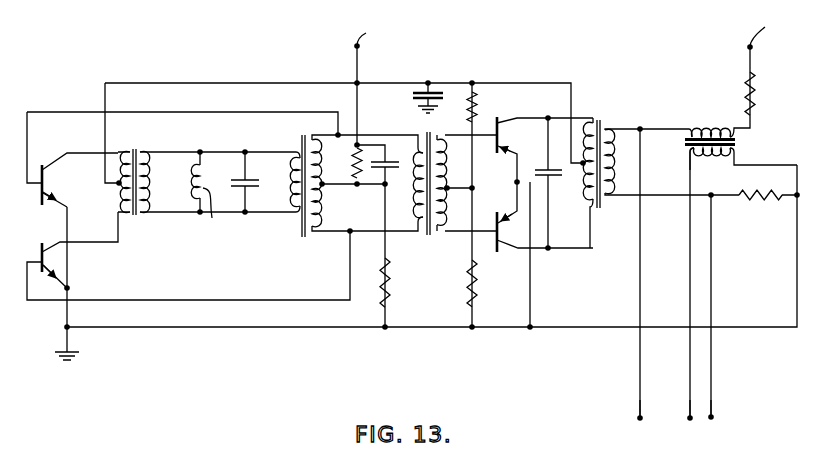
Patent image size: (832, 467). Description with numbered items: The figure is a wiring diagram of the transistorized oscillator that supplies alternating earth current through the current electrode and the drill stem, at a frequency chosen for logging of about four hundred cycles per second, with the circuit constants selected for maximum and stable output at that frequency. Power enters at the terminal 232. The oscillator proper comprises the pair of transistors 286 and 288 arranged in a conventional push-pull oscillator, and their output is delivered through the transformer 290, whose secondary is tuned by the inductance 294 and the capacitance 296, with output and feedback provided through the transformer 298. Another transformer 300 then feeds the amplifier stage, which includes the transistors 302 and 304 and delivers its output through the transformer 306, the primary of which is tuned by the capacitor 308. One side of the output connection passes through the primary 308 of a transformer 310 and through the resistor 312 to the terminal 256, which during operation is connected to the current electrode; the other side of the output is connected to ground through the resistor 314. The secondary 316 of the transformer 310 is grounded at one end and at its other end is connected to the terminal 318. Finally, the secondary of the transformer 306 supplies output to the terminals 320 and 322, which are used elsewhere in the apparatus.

The terminal 232 is at (381, 35).
The terminal 256 is at (778, 31).
The transistor 286 is at (39, 195).
The transistor 288 is at (38, 292).
The transformer 290 is at (138, 226).
The inductance 294 is at (216, 196).
The capacitance 296 is at (248, 188).
The transformer 298 is at (310, 238).
The transformer 300 is at (430, 240).
The transistor 302 is at (508, 108).
The transistor 304 is at (503, 257).
The transformer 306 is at (604, 220).
The capacitor / primary 308 is at (543, 168).
The transformer 310 is at (747, 141).
The resistor 312 is at (755, 97).
The resistor 314 is at (750, 203).
The secondary 316 is at (705, 156).
The terminal 318 is at (690, 418).
The terminal 320 is at (711, 417).
The terminal 322 is at (640, 418).